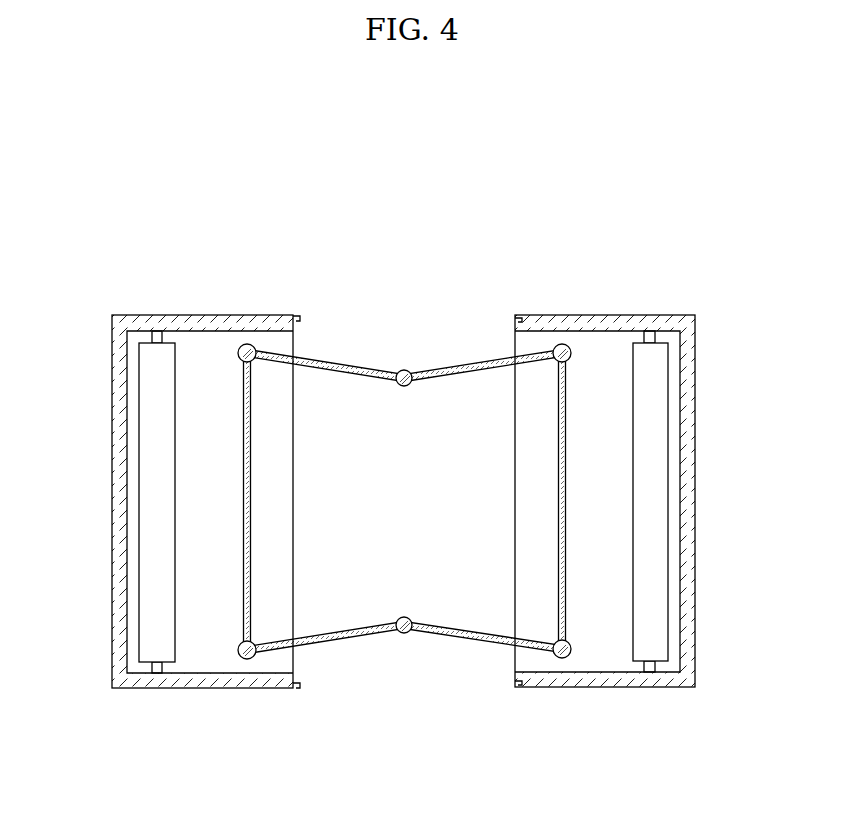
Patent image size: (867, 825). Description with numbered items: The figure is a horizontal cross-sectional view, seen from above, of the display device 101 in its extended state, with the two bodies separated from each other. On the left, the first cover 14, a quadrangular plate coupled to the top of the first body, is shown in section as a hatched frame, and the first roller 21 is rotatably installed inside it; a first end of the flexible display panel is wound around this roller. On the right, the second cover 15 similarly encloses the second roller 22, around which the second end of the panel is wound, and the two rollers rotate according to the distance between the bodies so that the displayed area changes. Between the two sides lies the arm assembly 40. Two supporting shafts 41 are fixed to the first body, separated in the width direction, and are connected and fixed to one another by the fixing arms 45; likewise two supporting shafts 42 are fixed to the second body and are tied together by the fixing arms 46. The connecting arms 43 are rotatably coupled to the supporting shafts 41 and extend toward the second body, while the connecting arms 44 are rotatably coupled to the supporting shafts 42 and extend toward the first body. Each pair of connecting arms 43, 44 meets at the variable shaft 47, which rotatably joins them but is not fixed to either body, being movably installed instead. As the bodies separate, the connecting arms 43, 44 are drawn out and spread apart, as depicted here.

The display device 101 is at (424, 187).
The first cover 14 is at (120, 393).
The second cover 15 is at (687, 388).
The first roller 21 is at (155, 343).
The second roller 22 is at (651, 335).
The arm assembly 40 is at (495, 345).
The supporting shafts 41 is at (248, 345).
The supporting shafts 42 is at (566, 347).
The connecting arms 43 is at (343, 368).
The connecting arms 44 is at (460, 368).
The fixing arms 45 is at (245, 455).
The fixing arms 46 is at (566, 500).
The variable shaft 47 is at (404, 370).